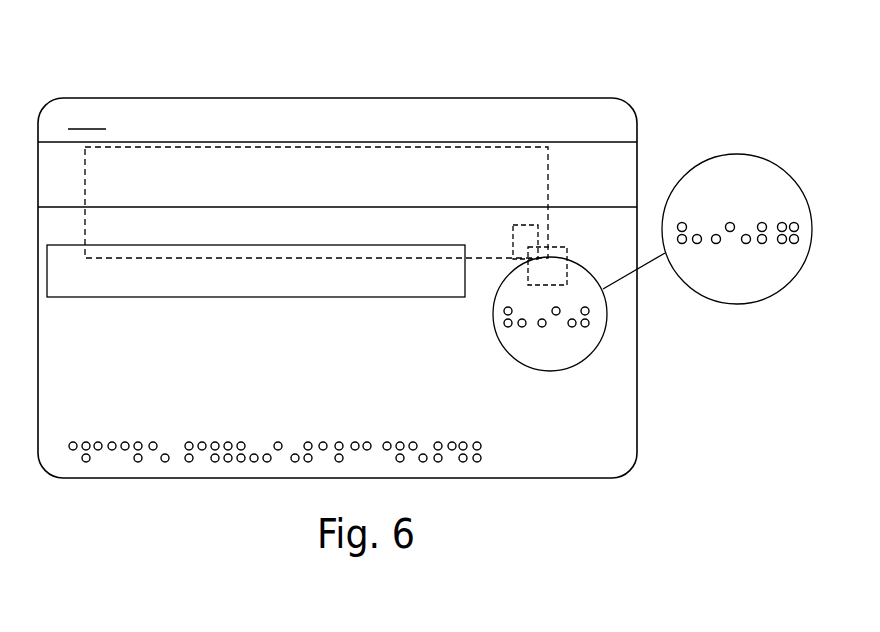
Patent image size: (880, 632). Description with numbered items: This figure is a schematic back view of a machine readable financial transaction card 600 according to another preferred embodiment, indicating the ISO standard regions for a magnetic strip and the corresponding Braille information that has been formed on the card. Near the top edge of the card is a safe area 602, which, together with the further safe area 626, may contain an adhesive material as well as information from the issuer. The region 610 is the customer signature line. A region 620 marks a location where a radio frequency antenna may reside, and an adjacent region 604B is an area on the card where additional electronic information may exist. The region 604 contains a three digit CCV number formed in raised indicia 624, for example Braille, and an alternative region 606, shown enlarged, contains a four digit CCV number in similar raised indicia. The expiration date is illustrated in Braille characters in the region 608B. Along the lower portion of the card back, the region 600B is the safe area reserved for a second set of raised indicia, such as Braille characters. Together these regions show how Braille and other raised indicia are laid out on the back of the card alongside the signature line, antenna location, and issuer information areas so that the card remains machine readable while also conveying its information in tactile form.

The machine readable financial transaction card 600 is at (531, 48).
The safe area adjacent the top edge 602 is at (87, 118).
The CCV number region 604 is at (512, 272).
The additional electronic information area 604B is at (602, 258).
The alternative CCV number region 606 is at (745, 156).
The expiration date region 608B is at (618, 453).
The customer signature line 610 is at (637, 152).
The radio frequency antenna location 620 is at (548, 235).
The raised indicia 624 is at (587, 328).
The safe area 626 is at (441, 298).
The safe area for second set of raised indicia 600B is at (150, 478).